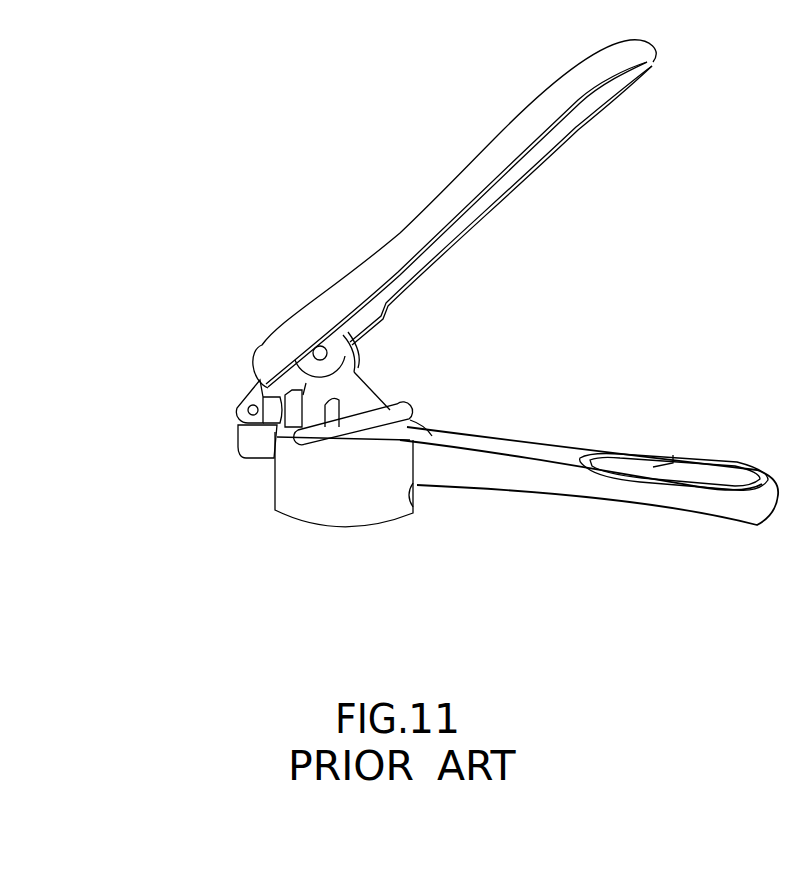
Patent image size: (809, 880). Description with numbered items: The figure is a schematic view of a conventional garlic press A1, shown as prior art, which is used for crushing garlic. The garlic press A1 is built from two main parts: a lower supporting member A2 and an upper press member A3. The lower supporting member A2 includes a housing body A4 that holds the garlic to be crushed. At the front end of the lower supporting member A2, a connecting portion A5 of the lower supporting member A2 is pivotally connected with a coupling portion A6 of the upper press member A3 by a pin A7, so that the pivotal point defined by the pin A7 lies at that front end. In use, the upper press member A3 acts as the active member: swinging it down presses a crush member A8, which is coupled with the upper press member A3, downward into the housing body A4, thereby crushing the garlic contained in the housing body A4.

The garlic press A1 is at (210, 318).
The lower supporting member A2 is at (527, 487).
The upper press member A3 is at (437, 217).
The housing body A4 is at (343, 512).
The connecting portion A5 is at (255, 448).
The coupling portion A6 is at (250, 397).
The pin A7 is at (237, 412).
The crush member A8 is at (400, 415).